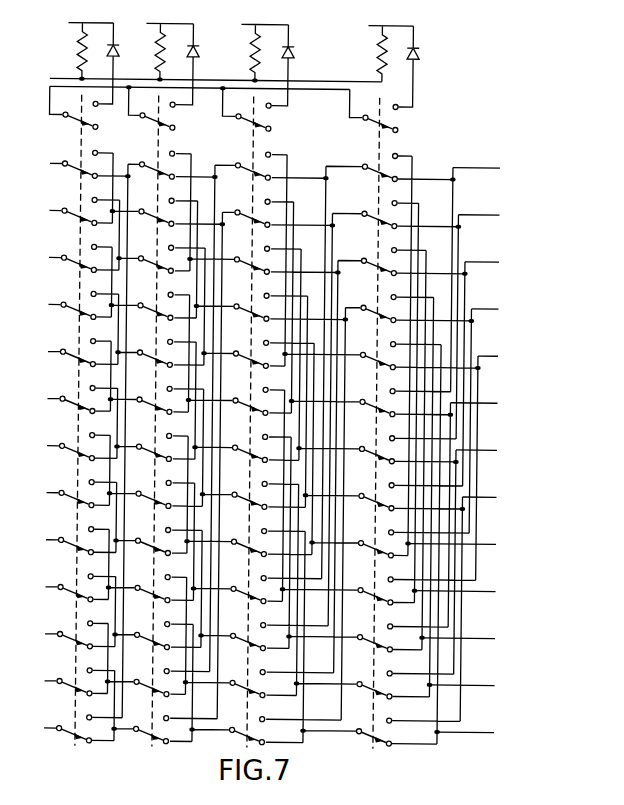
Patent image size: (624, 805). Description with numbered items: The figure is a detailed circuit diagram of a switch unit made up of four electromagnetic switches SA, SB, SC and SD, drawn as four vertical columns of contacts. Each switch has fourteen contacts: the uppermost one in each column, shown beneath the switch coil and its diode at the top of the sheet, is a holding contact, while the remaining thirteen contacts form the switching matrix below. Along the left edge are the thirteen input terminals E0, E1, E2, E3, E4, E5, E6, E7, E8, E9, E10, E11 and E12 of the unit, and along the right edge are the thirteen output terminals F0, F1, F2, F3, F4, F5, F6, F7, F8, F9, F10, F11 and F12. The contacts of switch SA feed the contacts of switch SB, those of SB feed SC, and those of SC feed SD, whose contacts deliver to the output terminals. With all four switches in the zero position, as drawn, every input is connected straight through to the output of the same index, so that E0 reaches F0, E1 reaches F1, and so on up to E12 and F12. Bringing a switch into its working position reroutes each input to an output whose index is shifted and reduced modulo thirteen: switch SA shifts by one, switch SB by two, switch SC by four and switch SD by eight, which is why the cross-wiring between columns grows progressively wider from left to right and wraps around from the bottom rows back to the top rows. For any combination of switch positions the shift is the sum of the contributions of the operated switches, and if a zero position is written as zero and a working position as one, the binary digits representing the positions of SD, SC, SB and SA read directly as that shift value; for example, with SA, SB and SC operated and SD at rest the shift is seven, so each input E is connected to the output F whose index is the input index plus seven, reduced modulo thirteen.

The electromagnetic switch SA is at (84, 75).
The electromagnetic switch SB is at (163, 76).
The electromagnetic switch SC is at (258, 77).
The electromagnetic switch SD is at (384, 79).
The input terminal E0 is at (46, 165).
The input terminal E1 is at (45, 212).
The input terminal E2 is at (45, 259).
The input terminal E3 is at (44, 306).
The input terminal E4 is at (44, 353).
The input terminal E5 is at (43, 400).
The input terminal E6 is at (43, 447).
The input terminal E7 is at (42, 494).
The input terminal E8 is at (42, 541).
The input terminal E9 is at (41, 588).
The input terminal E10 is at (40, 635).
The input terminal E11 is at (39, 682).
The input terminal E12 is at (39, 729).
The output terminal F0 is at (485, 170).
The output terminal F1 is at (487, 217).
The output terminal F2 is at (490, 264).
The output terminal F3 is at (493, 311).
The output terminal F4 is at (496, 358).
The output terminal F5 is at (482, 405).
The output terminal F6 is at (485, 452).
The output terminal F7 is at (488, 499).
The output terminal F8 is at (460, 545).
The output terminal F9 is at (463, 592).
The output terminal F10 is at (470, 639).
The output terminal F11 is at (473, 686).
The output terminal F12 is at (477, 733).